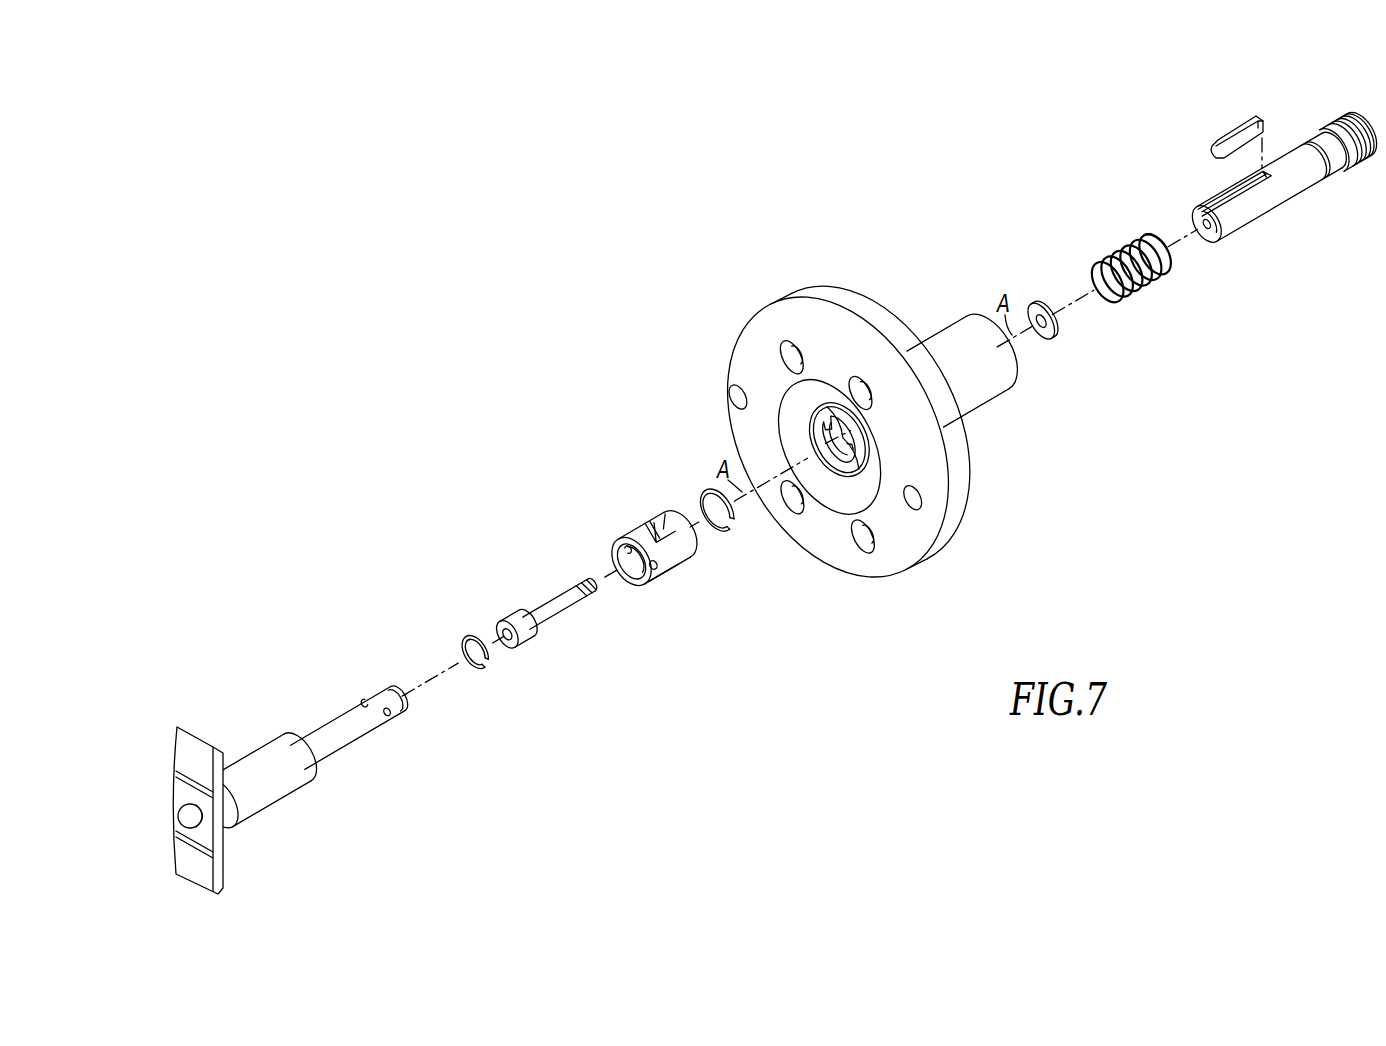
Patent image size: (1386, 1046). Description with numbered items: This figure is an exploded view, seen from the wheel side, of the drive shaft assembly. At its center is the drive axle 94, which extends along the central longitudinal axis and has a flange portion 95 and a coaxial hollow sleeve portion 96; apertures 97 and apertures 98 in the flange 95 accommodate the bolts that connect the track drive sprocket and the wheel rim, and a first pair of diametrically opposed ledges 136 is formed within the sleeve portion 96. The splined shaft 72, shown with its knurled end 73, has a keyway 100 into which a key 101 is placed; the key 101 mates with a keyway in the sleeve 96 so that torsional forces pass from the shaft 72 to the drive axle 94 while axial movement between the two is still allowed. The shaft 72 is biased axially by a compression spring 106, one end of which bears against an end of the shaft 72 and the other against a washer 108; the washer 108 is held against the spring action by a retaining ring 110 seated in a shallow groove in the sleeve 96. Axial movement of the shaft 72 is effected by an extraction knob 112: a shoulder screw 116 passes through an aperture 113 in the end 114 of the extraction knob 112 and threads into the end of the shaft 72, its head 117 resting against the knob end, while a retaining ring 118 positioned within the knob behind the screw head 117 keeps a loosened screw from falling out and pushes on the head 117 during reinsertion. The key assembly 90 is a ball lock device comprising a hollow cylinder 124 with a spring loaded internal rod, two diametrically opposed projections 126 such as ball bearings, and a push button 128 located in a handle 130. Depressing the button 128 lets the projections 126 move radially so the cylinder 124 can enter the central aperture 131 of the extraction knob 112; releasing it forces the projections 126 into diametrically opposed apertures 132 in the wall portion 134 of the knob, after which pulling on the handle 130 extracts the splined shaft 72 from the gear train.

The splined shaft 72 is at (1267, 206).
The knurled knob 73 is at (1343, 125).
The key assembly 90 is at (294, 697).
The drive axle 94 is at (962, 481).
The flange portion 95 is at (828, 308).
The sleeve portion 96 is at (982, 405).
The apertures 97 is at (852, 535).
The apertures 98 is at (730, 398).
The keyway 100 is at (1207, 210).
The key 101 is at (1223, 135).
The compression spring 106 is at (1120, 258).
The washer 108 is at (1047, 339).
The retaining ring 110 is at (727, 529).
The extraction knob 112 is at (647, 525).
The aperture 113 is at (677, 550).
The end 114 is at (683, 533).
The shoulder screw 116 is at (562, 588).
The head 117 is at (512, 612).
The retaining ring 118 is at (465, 637).
The hollow cylinder 124 is at (337, 741).
The projections 126 is at (362, 698).
The push button 128 is at (180, 817).
The handle 130 is at (180, 755).
The central aperture 131 is at (623, 573).
The apertures 132 is at (615, 554).
The wall portion 134 is at (642, 591).
The ledges 136 is at (836, 427).